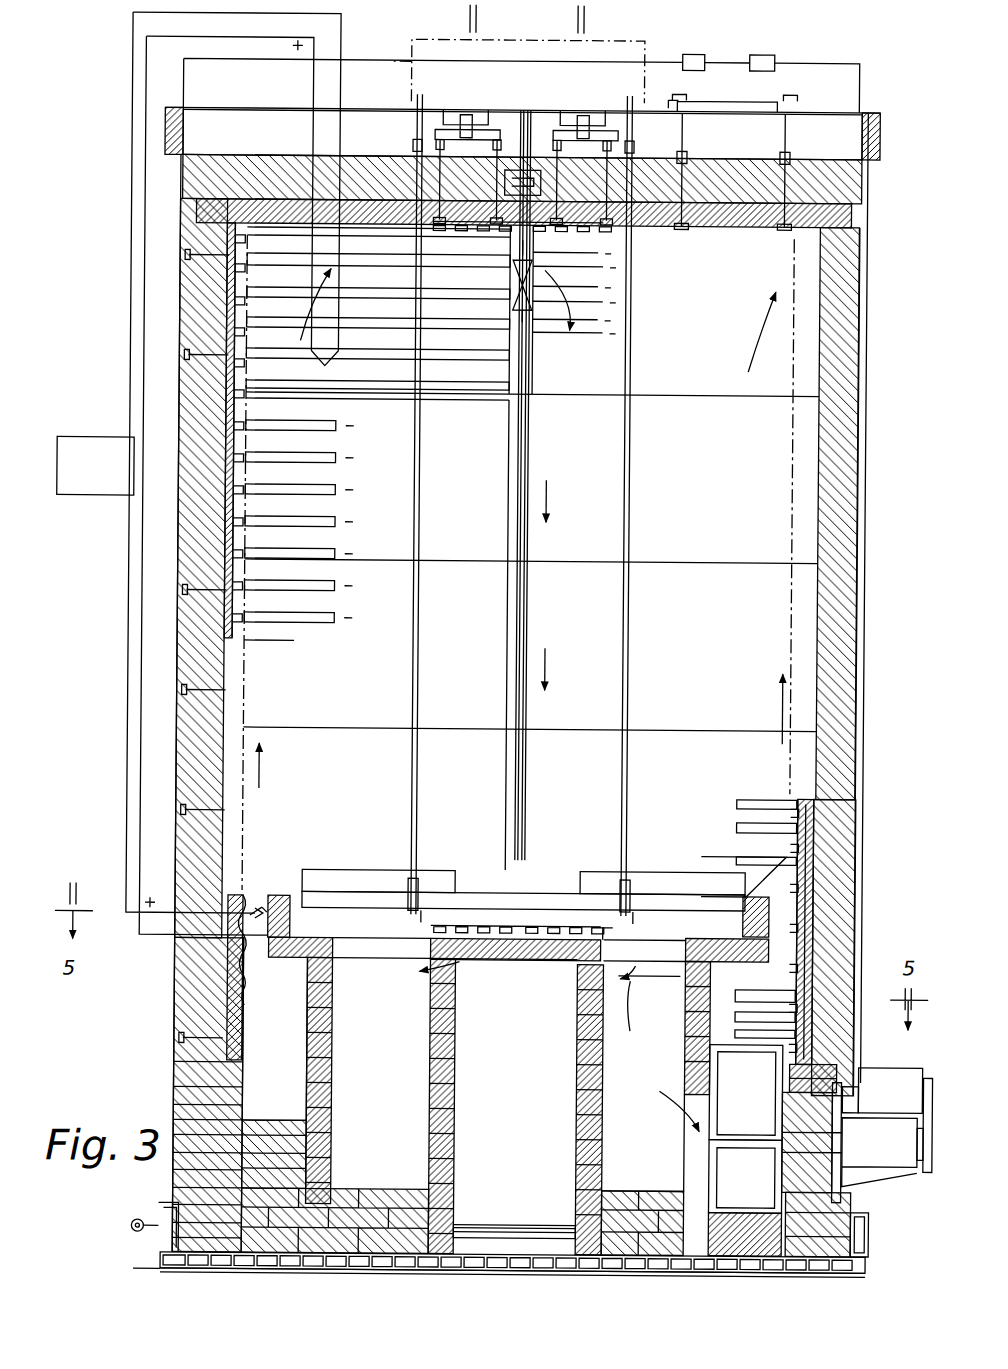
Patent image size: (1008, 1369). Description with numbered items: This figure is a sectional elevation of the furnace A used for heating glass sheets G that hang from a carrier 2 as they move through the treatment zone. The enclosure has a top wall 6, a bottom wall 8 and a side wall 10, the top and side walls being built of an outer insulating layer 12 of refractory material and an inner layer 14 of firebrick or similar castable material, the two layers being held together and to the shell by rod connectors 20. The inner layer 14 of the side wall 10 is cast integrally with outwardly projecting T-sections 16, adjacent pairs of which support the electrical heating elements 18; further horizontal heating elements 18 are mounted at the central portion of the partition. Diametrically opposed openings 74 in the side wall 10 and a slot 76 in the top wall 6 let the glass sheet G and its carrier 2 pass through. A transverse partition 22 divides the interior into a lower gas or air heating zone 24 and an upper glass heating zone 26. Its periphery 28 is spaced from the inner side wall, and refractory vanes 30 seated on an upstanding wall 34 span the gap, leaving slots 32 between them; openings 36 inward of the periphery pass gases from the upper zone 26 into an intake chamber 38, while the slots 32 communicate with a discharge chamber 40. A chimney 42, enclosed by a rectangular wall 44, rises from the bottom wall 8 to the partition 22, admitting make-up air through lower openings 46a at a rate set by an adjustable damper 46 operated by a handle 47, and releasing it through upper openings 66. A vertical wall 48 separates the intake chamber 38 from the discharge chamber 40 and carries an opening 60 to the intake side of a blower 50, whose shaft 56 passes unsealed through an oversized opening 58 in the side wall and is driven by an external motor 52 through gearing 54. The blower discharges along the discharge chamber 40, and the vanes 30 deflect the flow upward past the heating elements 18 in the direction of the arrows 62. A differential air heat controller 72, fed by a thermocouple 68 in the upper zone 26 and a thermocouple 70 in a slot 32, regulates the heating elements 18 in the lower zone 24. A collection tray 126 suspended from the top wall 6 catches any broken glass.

The furnace A is at (724, 55).
The carrier 2 is at (512, 250).
The top wall 6 is at (700, 157).
The bottom wall 8 is at (335, 1265).
The side wall 10 is at (865, 430).
The insulating layer 12 is at (815, 180).
The inner layer 14 is at (720, 215).
The T-sections 16 is at (305, 500).
The electrical heating elements 18 is at (430, 235).
The rod connectors 20 is at (215, 258).
The transverse partition 22 is at (298, 960).
The lower gas or air heating zone 24 is at (250, 1045).
The upper glass heating zone 26 is at (800, 545).
The periphery of the partition 28 is at (268, 950).
The vanes 30 is at (762, 880).
The slots 32 is at (243, 945).
The upstanding wall 34 is at (285, 895).
The openings 36 is at (645, 950).
The intake chamber 38 is at (630, 1088).
The discharge chamber 40 is at (297, 1068).
The chimney 42 is at (445, 1100).
The rectangular wall 44 is at (465, 1060).
The adjustable damper 46 is at (500, 1226).
The openings 46a is at (495, 1273).
The handle 47 is at (133, 1228).
The vertical wall 48 is at (330, 1100).
The blower 50 is at (720, 1065).
The motor 52 is at (882, 1068).
The gearing 54 is at (926, 1173).
The shaft 56 is at (805, 1128).
The opening 58 is at (805, 1160).
The opening 60 is at (690, 1142).
The discharge opening / arrows 62 is at (300, 322).
The openings 66 is at (420, 972).
The thermocouple 68 is at (325, 368).
The thermocouple 70 is at (258, 918).
The differential air heat controller 72 is at (105, 437).
The openings 74 is at (528, 615).
The slot 76 is at (535, 232).
The glass sheet G is at (530, 456).
The collection tray 126 is at (375, 880).